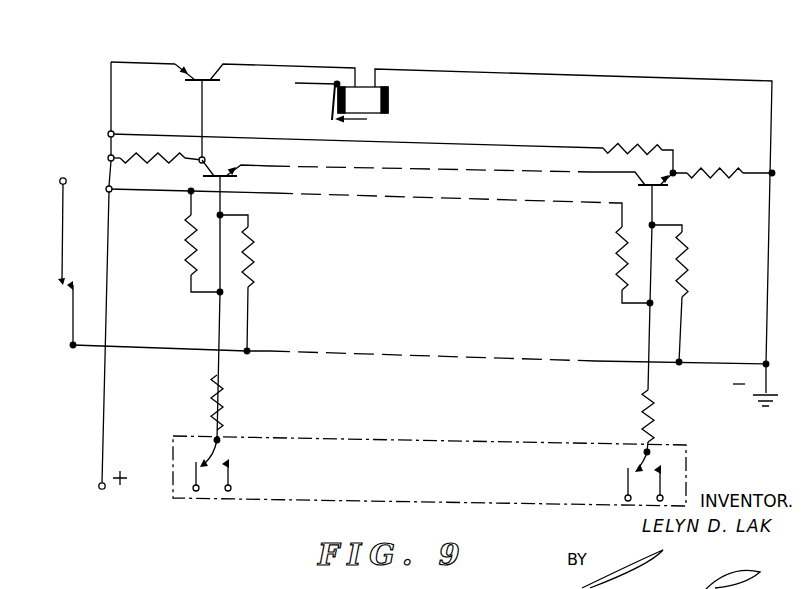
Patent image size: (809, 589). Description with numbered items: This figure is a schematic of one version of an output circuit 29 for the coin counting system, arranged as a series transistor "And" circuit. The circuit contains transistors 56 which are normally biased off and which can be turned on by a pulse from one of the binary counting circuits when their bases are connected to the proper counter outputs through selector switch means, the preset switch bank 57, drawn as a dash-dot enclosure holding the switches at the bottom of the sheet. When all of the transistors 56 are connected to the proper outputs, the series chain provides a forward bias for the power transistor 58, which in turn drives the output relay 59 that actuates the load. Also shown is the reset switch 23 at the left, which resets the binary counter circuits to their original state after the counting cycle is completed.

The reset switch 23 is at (73, 300).
The output circuit 29 is at (583, 63).
The transistors 56 is at (687, 200).
The preset switch bank 57 is at (360, 438).
The power transistor 58 is at (204, 78).
The output relay 59 is at (390, 105).